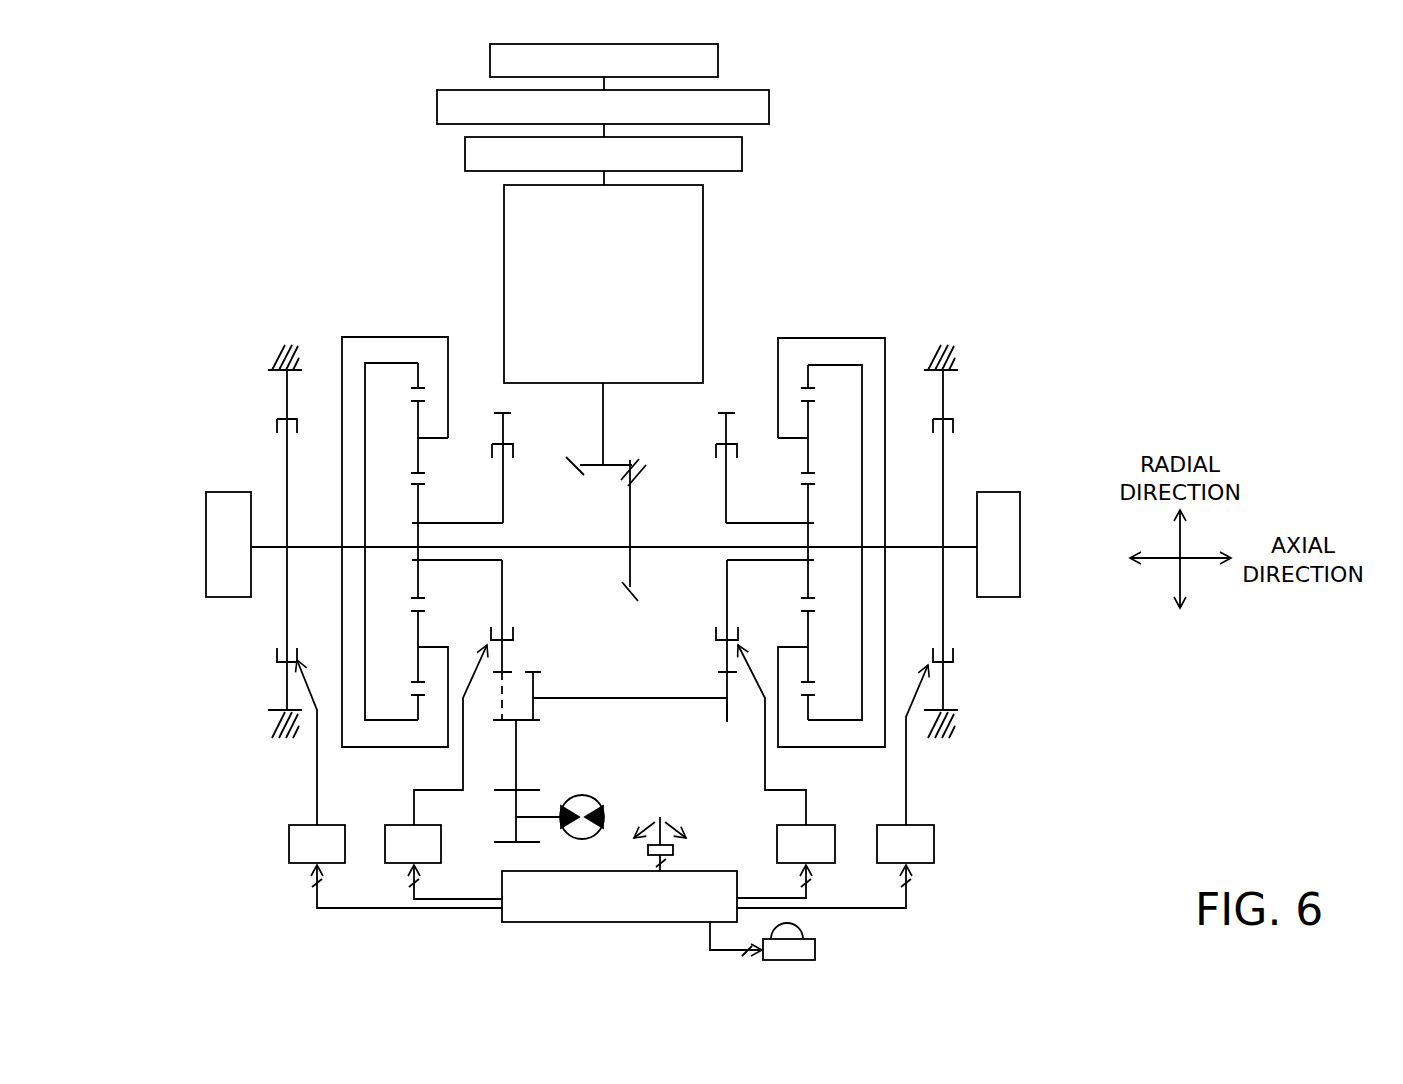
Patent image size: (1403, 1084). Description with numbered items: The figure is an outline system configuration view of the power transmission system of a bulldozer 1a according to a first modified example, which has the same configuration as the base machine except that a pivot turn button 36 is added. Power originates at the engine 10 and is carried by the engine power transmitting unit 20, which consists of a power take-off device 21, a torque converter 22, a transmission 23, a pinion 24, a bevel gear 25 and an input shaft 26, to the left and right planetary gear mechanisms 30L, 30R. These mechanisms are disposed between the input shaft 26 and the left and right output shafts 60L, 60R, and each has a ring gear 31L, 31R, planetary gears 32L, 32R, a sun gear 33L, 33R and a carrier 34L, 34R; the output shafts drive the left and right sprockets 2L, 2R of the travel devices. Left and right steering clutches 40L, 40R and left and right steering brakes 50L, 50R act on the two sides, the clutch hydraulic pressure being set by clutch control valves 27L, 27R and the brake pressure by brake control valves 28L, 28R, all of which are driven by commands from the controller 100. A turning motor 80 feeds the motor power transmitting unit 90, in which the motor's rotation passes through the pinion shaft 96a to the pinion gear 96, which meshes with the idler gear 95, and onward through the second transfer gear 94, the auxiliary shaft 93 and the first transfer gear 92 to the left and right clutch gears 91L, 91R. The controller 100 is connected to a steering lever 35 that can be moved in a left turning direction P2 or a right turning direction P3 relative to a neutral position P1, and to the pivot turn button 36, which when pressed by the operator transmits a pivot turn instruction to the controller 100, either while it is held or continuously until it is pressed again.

The bulldozer 1a is at (1003, 172).
The left sprocket 2L is at (230, 597).
The right sprocket 2R is at (1000, 597).
The engine 10 is at (490, 60).
The engine power transmitting unit 20 is at (312, 128).
The power take-off device 21 is at (437, 107).
The torque converter 22 is at (465, 155).
The transmission 23 is at (504, 210).
The pinion 24 is at (612, 463).
The bevel gear 25 is at (638, 567).
The input shaft 26 is at (598, 550).
The left clutch control valve 27L is at (443, 772).
The right clutch control valve 27R is at (786, 771).
The left brake control valve 28L is at (395, 784).
The right brake control valve 28R is at (835, 786).
The left planetary gear mechanism 30L is at (401, 482).
The right planetary gear mechanism 30R is at (833, 484).
The left ring gear 31L is at (425, 385).
The right ring gear 31R is at (800, 385).
The left planetary gear 32L is at (421, 432).
The right planetary gear 32R is at (805, 432).
The left sun gear 33L is at (445, 523).
The right sun gear 33R is at (790, 523).
The left carrier 34L is at (390, 337).
The right carrier 34R is at (842, 338).
The steering lever 35 is at (684, 830).
The pivot turn button 36 is at (815, 938).
The left steering clutch 40L is at (512, 450).
The right steering clutch 40R is at (716, 450).
The left steering brake 50L is at (277, 425).
The right steering brake 50R is at (953, 425).
The left output shaft 60L is at (310, 550).
The right output shaft 60R is at (908, 550).
The turning motor 80 is at (597, 800).
The motor power transmitting unit 90 is at (653, 705).
The left clutch gear 91L is at (512, 640).
The right clutch gear 91R is at (716, 640).
The first transfer gear 92 is at (723, 715).
The auxiliary shaft 93 is at (622, 695).
The second transfer gear 94 is at (537, 685).
The idler gear 95 is at (518, 745).
The pinion gear 96 is at (516, 808).
The pinion shaft 96a is at (553, 815).
The controller 100 is at (619, 896).
The neutral position P1 is at (660, 800).
The left turning direction P2 is at (627, 840).
The right turning direction P3 is at (735, 858).